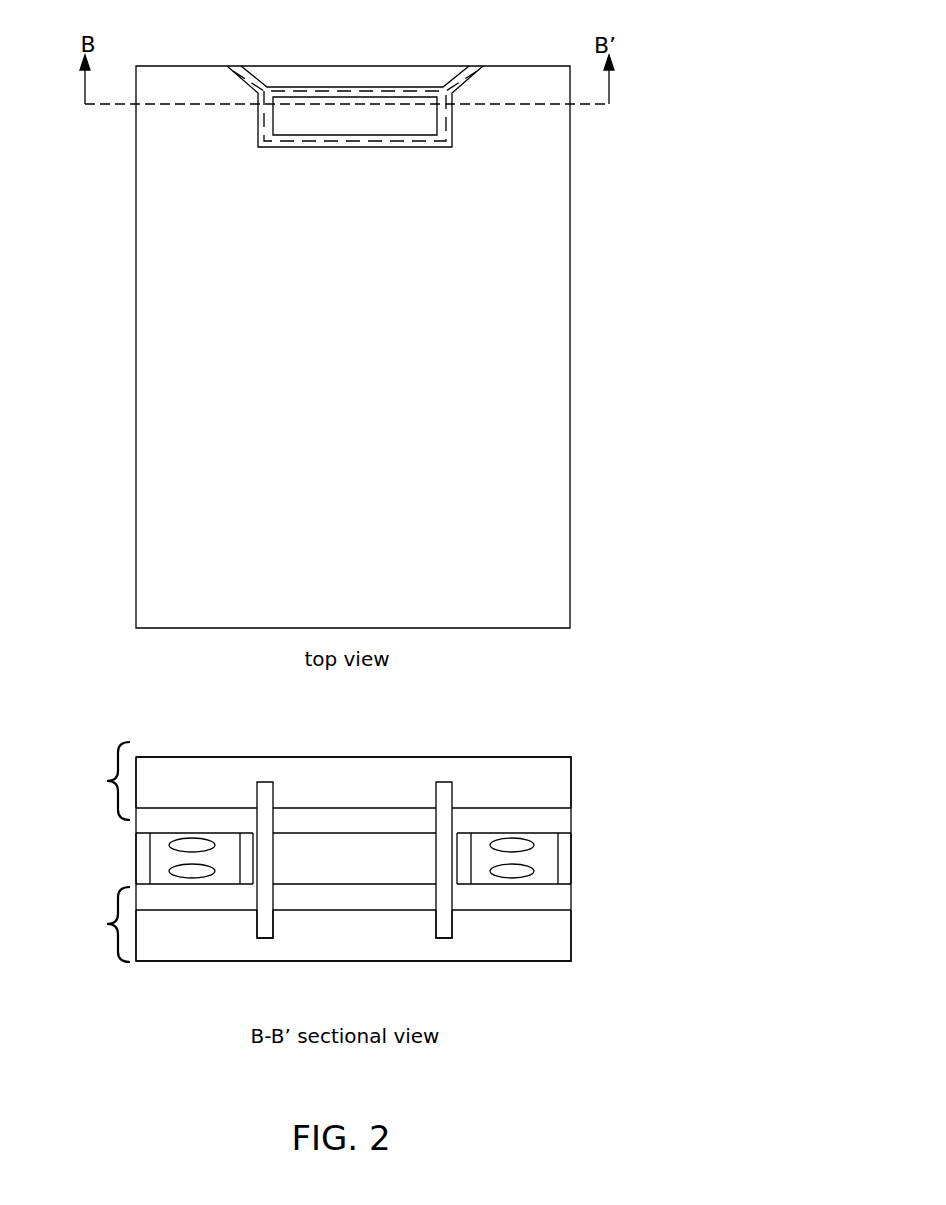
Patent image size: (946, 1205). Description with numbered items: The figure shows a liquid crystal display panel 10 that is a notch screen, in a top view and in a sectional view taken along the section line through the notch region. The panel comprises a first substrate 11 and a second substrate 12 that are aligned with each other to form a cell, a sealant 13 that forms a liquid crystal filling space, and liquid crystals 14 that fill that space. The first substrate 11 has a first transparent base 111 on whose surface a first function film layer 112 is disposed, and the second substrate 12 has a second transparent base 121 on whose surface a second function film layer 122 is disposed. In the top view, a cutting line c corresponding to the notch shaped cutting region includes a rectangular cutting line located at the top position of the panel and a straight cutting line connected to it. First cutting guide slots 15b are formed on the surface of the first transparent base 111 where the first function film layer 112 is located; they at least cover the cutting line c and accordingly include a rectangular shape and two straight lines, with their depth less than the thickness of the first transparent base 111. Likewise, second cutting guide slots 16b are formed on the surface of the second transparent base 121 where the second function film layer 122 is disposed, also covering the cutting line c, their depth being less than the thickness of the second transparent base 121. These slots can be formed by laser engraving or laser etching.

The liquid crystal display panel 10 is at (50, 58).
The first substrate 11 is at (325, 787).
The first transparent base 111 is at (555, 792).
The first function film layer 112 is at (532, 388).
The second substrate 12 is at (326, 923).
The second transparent base 121 is at (562, 930).
The second function film layer 122 is at (555, 907).
The sealant 13 is at (562, 865).
The liquid crystals 14 is at (188, 845).
The first cutting guide slots 15b is at (257, 95).
The second cutting guide slots 16b is at (268, 923).
The cutting line c is at (373, 90).